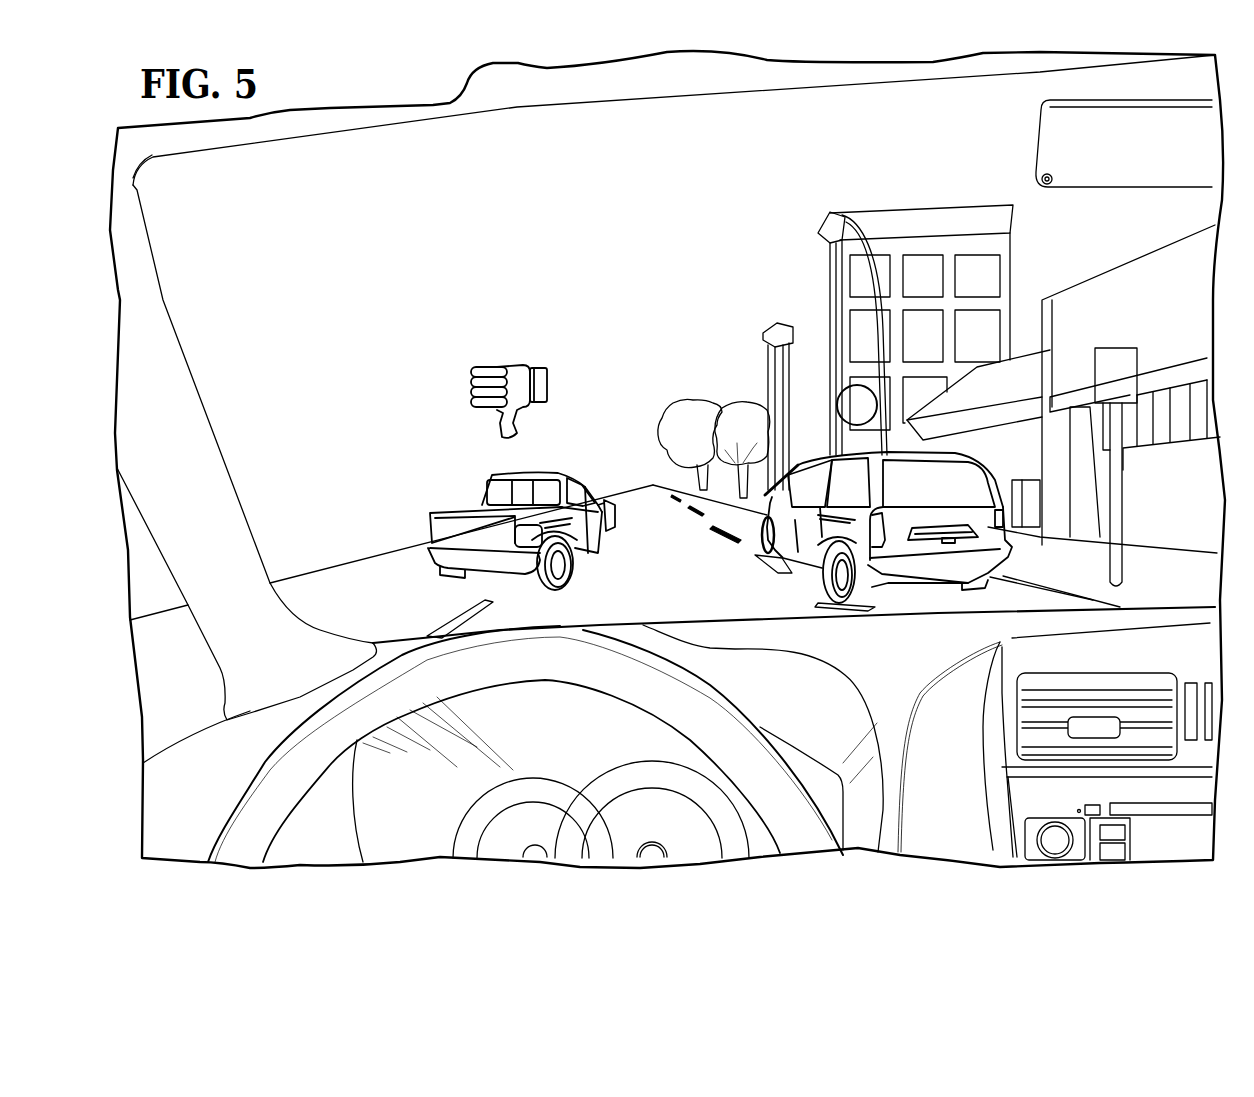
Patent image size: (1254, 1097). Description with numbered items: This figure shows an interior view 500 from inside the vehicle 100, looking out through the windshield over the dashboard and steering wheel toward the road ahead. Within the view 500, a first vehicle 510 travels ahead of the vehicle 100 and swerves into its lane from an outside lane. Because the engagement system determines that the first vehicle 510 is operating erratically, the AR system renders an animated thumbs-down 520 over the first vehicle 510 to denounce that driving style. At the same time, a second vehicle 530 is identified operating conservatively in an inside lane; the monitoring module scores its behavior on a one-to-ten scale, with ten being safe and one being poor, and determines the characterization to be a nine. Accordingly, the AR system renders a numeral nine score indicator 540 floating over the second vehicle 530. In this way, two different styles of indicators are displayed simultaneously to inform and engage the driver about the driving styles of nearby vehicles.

The interior view 500 is at (453, 92).
The first vehicle 510 is at (483, 495).
The animated thumbs-down 520 is at (513, 363).
The second vehicle 530 is at (1010, 543).
The number "9" 540 is at (837, 391).
The vehicle 100 is at (945, 797).